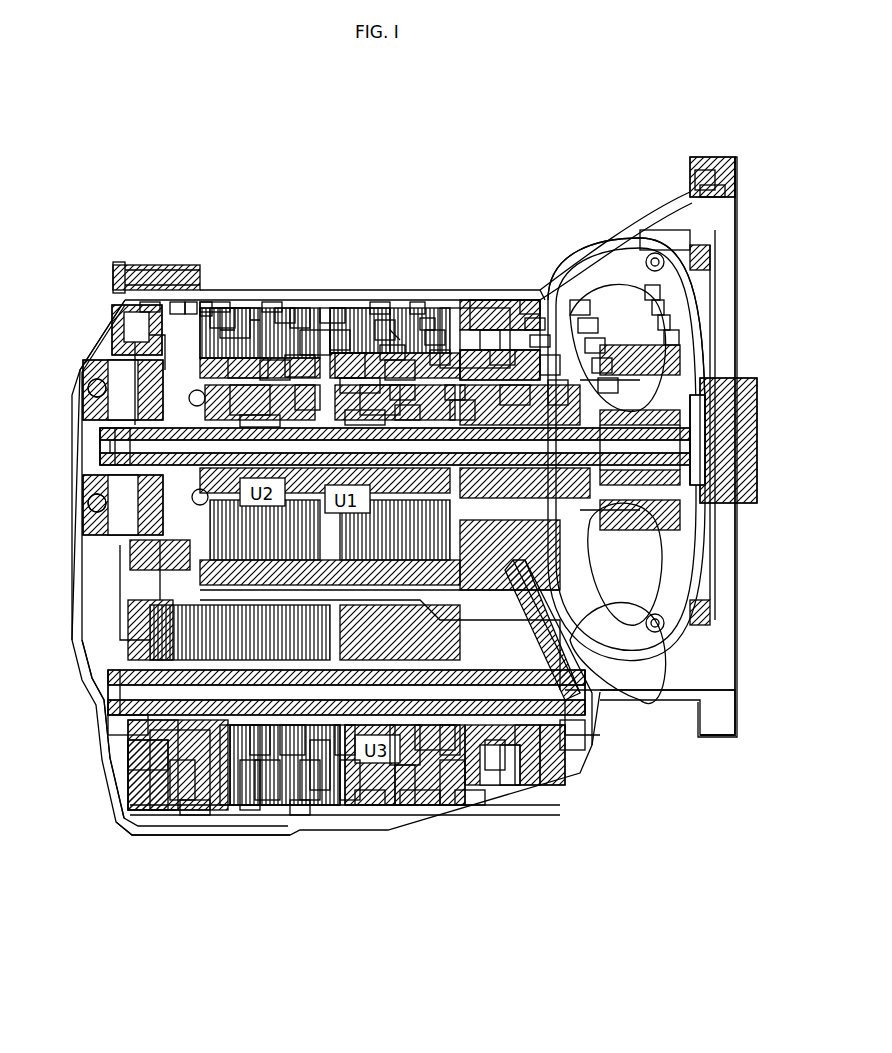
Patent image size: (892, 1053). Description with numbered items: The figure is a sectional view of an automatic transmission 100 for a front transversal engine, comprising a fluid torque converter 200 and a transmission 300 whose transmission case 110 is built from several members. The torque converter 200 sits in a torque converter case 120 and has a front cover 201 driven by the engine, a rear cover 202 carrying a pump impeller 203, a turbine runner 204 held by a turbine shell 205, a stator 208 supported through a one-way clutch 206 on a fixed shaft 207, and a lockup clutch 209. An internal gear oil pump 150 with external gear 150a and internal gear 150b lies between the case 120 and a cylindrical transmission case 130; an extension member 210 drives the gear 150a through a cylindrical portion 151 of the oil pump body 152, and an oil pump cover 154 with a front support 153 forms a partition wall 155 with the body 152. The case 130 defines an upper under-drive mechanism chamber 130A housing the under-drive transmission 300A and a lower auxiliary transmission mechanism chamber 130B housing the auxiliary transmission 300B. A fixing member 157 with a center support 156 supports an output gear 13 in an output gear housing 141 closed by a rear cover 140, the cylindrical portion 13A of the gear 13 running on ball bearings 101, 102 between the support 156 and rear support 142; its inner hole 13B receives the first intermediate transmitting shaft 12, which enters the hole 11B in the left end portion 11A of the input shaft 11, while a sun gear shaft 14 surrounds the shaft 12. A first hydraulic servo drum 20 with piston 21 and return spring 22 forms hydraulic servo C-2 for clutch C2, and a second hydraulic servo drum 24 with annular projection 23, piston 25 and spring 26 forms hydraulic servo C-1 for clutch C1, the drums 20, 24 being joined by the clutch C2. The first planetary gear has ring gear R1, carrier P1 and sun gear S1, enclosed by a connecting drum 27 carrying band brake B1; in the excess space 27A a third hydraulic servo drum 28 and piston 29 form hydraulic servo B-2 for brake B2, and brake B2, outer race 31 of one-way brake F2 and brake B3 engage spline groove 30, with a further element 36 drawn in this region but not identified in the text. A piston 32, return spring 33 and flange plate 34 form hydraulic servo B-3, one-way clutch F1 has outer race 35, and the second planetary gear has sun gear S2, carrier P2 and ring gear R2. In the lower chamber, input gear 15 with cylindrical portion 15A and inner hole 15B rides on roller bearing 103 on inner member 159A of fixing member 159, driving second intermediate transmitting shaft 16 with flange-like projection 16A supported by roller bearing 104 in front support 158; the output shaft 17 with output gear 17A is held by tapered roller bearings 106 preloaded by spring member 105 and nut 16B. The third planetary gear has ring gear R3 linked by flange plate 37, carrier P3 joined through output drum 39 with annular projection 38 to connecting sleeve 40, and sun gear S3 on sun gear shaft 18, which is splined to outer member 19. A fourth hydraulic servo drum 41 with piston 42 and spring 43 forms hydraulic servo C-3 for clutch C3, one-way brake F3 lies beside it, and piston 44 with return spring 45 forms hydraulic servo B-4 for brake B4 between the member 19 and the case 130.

The input shaft 11 is at (662, 315).
The large diametrical left end portion 11A is at (415, 302).
The leftward hole 11B is at (425, 318).
The first intermediate transmitting shaft 12 is at (330, 308).
The output gear 13 is at (140, 300).
The central cylindrical portion 13A is at (115, 385).
The inner hole 13B is at (95, 438).
The sun gear shaft 14 is at (322, 305).
The input gear 15 is at (100, 666).
The central cylindrical portion 15A is at (140, 745).
The inner hole 15B is at (115, 725).
The second intermediate transmitting shaft 16 is at (110, 698).
The flange-like projection 16A is at (455, 806).
The nut 16B is at (572, 752).
The output shaft 17 is at (545, 790).
The output gear 17A is at (508, 785).
The sun gear shaft 18 is at (345, 806).
The cylindrical outer member 19 is at (262, 806).
The first hydraulic servo drum 20 is at (508, 385).
The annular piston 21 is at (498, 350).
The return spring 22 is at (490, 330).
The annular projection 23 is at (452, 385).
The second hydraulic servo drum 24 is at (438, 350).
The annular piston 25 is at (432, 330).
The return spring 26 is at (400, 385).
The connecting drum 27 is at (405, 405).
The excess space 27A is at (390, 345).
The third hydraulic servo drum 28 is at (348, 353).
The piston 29 is at (338, 330).
The spline groove 30 is at (218, 308).
The outer race 31 is at (272, 302).
The piston 32 is at (178, 300).
The return spring 33 is at (190, 302).
The flange plate 34 is at (210, 305).
The outer race 35 is at (298, 308).
The one-way clutch race 36 is at (283, 308).
The flange plate 37 is at (468, 806).
The annular projection 38 is at (352, 806).
The output drum 39 is at (410, 810).
The connecting sleeve 40 is at (448, 806).
The fourth hydraulic servo drum 41 is at (318, 806).
The annular piston 42 is at (308, 806).
The return spring 43 is at (292, 806).
The piston 44 is at (180, 800).
The return spring 45 is at (250, 810).
The automatic transmission 100 is at (752, 218).
The ball bearing 101 is at (100, 350).
The ball bearing 102 is at (85, 385).
The roller bearing 103 is at (175, 730).
The roller bearing 104 is at (590, 745).
The spring member 105 is at (522, 790).
The tapered roller bearings 106 is at (495, 785).
The transmission case 110 is at (548, 355).
The torque converter case 120 is at (638, 700).
The transmission case 130 is at (305, 385).
The under-drive mechanism chamber 130A is at (385, 320).
The auxiliary transmission mechanism chamber 130B is at (370, 806).
The rear cover 140 is at (80, 410).
The output gear housing 141 is at (86, 500).
The rear support 142 is at (100, 530).
The internal gear oil pump 150 is at (555, 380).
The external gear 150a is at (580, 300).
The internal gear 150b is at (586, 318).
The cylindrical portion 151 is at (598, 358).
The oil pump body 152 is at (592, 338).
The front support 153 is at (528, 300).
The oil pump cover 154 is at (535, 318).
The partition wall 155 is at (540, 335).
The center support 156 is at (208, 302).
The fixing member 157 is at (152, 302).
The front support 158 is at (568, 740).
The fixing member 159 is at (112, 815).
The inner member 159A is at (210, 816).
The fluid torque converter 200 is at (700, 210).
The front cover 201 is at (700, 330).
The rear cover 202 is at (650, 285).
The pump impeller 203 is at (656, 300).
The turbine runner 204 is at (668, 330).
The turbine shell 205 is at (700, 175).
The one-way clutch 206 is at (700, 360).
The fixed shaft 207 is at (712, 192).
The stator 208 is at (706, 185).
The direct connecting clutch 209 is at (692, 230).
The extension member 210 is at (605, 378).
The transmission 300 is at (96, 292).
The under-drive transmission 300A is at (378, 302).
The auxiliary transmission 300B is at (296, 816).
The band brake B1 is at (460, 400).
The multi-plate brake B2 is at (312, 330).
The multi-plate brake B3 is at (230, 308).
The multi-plate brake B4 is at (238, 810).
The hydraulic servo B-2 is at (345, 315).
The hydraulic servo B-3 is at (175, 300).
The hydraulic servo B-4 is at (162, 810).
The multi-plate clutch C1 is at (395, 360).
The multi-plate clutch C2 is at (485, 300).
The multi-plate clutch C3 is at (360, 810).
The hydraulic servo C-1 is at (448, 340).
The hydraulic servo C-2 is at (503, 350).
The hydraulic servo C-3 is at (285, 820).
The one-way clutch F1 is at (295, 355).
The one-way brake F2 is at (272, 360).
The one-way brake F3 is at (268, 806).
The carrier P1 is at (372, 385).
The carrier P2 is at (245, 385).
The carrier P3 is at (400, 806).
The ring gear R1 is at (352, 378).
The ring gear R2 is at (238, 358).
The ring gear R3 is at (428, 806).
The sun gear S1 is at (358, 410).
The sun gear S2 is at (255, 415).
The sun gear S3 is at (418, 806).